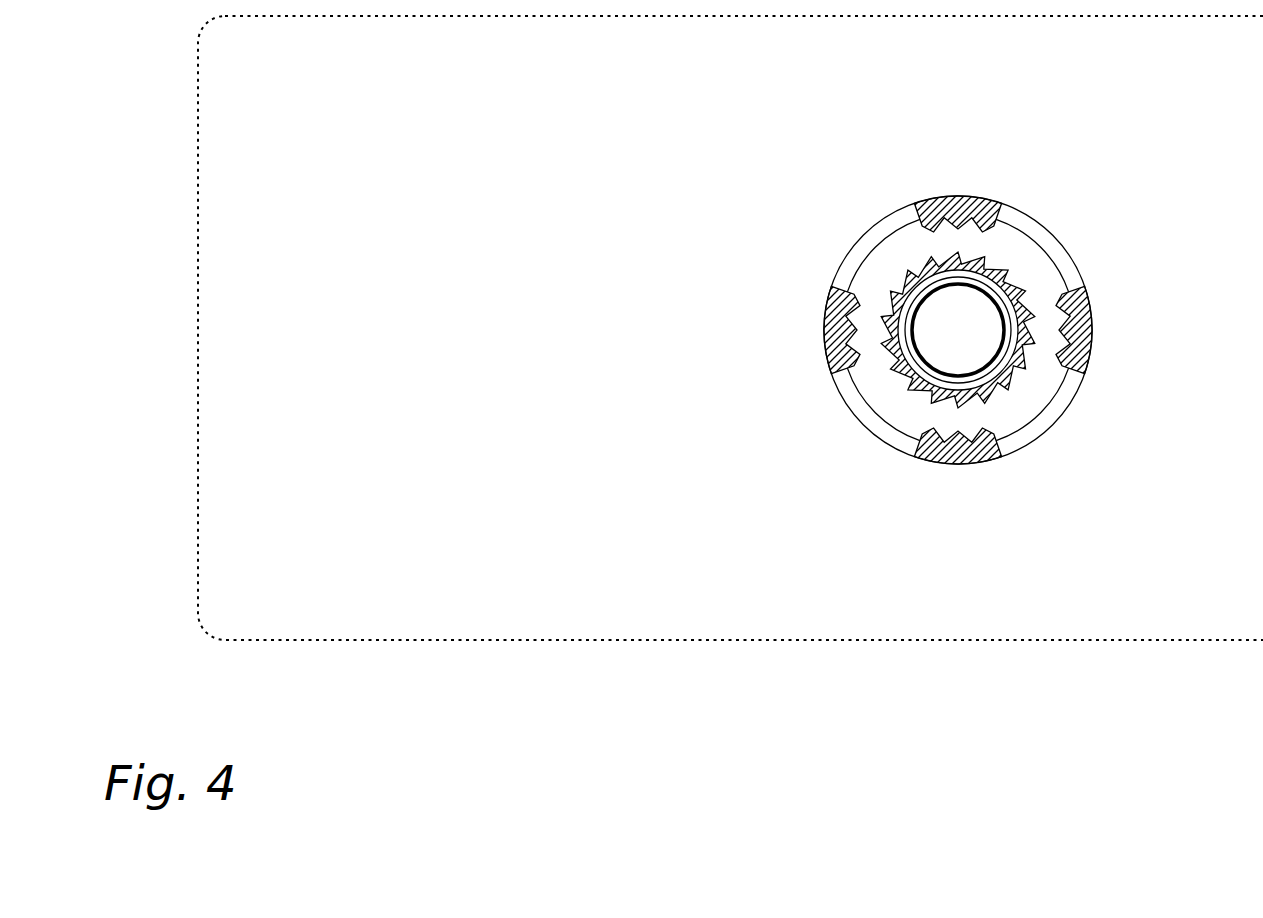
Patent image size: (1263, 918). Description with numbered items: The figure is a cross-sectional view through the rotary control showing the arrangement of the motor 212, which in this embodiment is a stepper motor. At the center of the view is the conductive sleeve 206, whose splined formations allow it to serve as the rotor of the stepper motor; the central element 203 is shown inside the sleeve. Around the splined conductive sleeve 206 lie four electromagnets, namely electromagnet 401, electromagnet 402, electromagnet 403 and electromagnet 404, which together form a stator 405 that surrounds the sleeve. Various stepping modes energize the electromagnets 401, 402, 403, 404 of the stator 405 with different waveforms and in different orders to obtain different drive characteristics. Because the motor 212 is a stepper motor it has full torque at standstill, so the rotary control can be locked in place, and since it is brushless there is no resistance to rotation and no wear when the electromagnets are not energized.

The motor 212 is at (273, 64).
The stator 405 is at (850, 215).
The electromagnet 401 is at (972, 197).
The electromagnet 402 is at (1090, 348).
The electromagnet 403 is at (980, 462).
The electromagnet 404 is at (829, 352).
The conductive sleeve 206 is at (1004, 270).
The shaft 203 is at (938, 341).